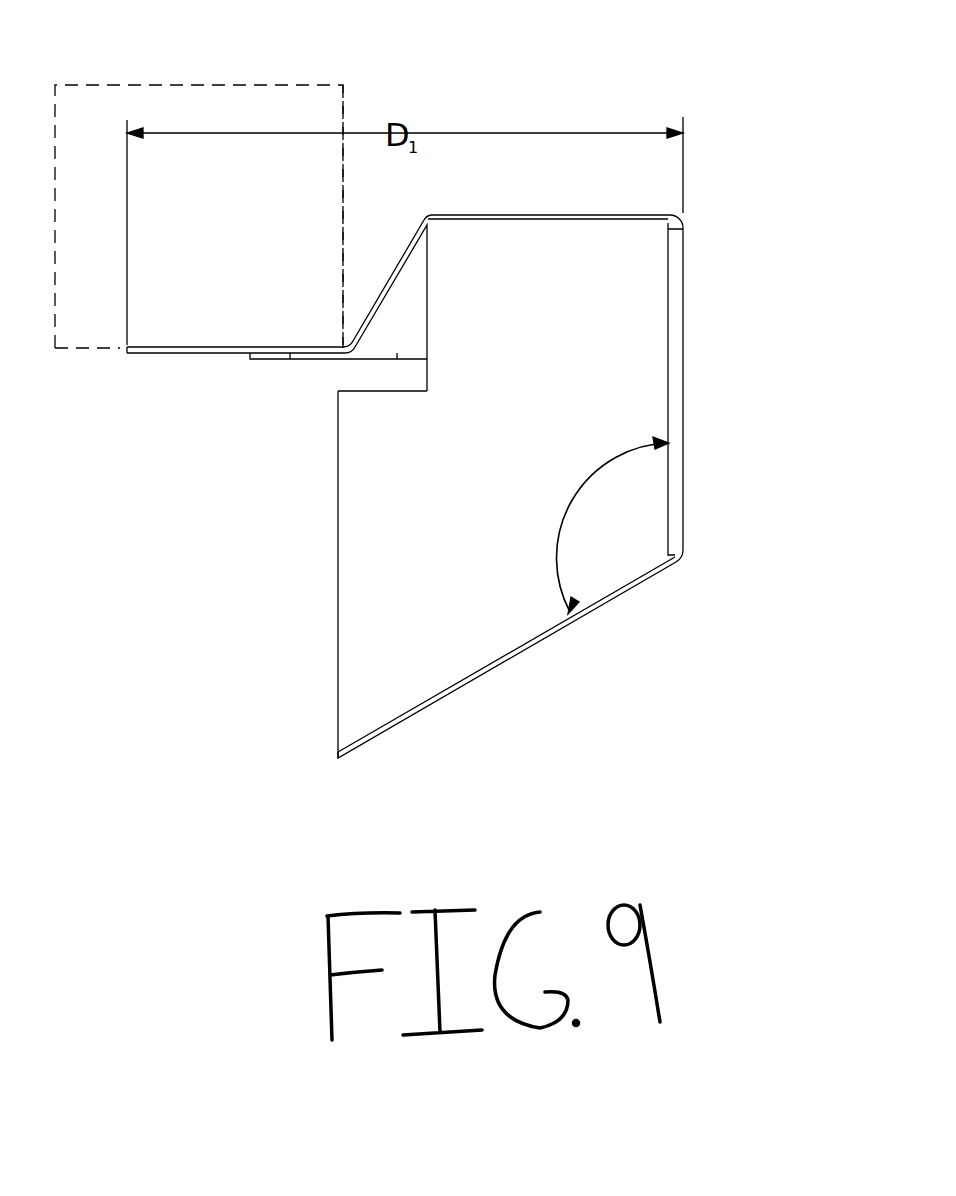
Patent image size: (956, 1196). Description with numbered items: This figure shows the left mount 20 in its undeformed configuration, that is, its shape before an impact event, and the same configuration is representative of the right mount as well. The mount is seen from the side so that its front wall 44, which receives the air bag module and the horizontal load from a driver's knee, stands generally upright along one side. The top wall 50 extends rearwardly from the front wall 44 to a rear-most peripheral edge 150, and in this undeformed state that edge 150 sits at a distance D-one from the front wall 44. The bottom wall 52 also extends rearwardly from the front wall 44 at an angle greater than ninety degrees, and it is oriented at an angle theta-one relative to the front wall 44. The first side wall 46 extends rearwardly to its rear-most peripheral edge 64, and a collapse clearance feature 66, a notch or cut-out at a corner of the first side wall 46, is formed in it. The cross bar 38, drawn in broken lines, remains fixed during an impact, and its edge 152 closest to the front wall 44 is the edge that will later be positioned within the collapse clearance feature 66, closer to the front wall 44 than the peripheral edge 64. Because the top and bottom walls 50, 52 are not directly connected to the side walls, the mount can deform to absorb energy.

The left mount 20 is at (469, 455).
The cross bar 38 is at (207, 82).
The front wall 44 is at (685, 400).
The first side wall 46 is at (640, 353).
The top wall 50 is at (498, 215).
The bottom wall 52 is at (492, 672).
The rear-most peripheral edge of first side wall 64 is at (338, 578).
The collapse clearance feature 66 is at (358, 372).
The rear-most peripheral edge of top wall 150 is at (106, 352).
The edge of cross bar 152 is at (347, 112).